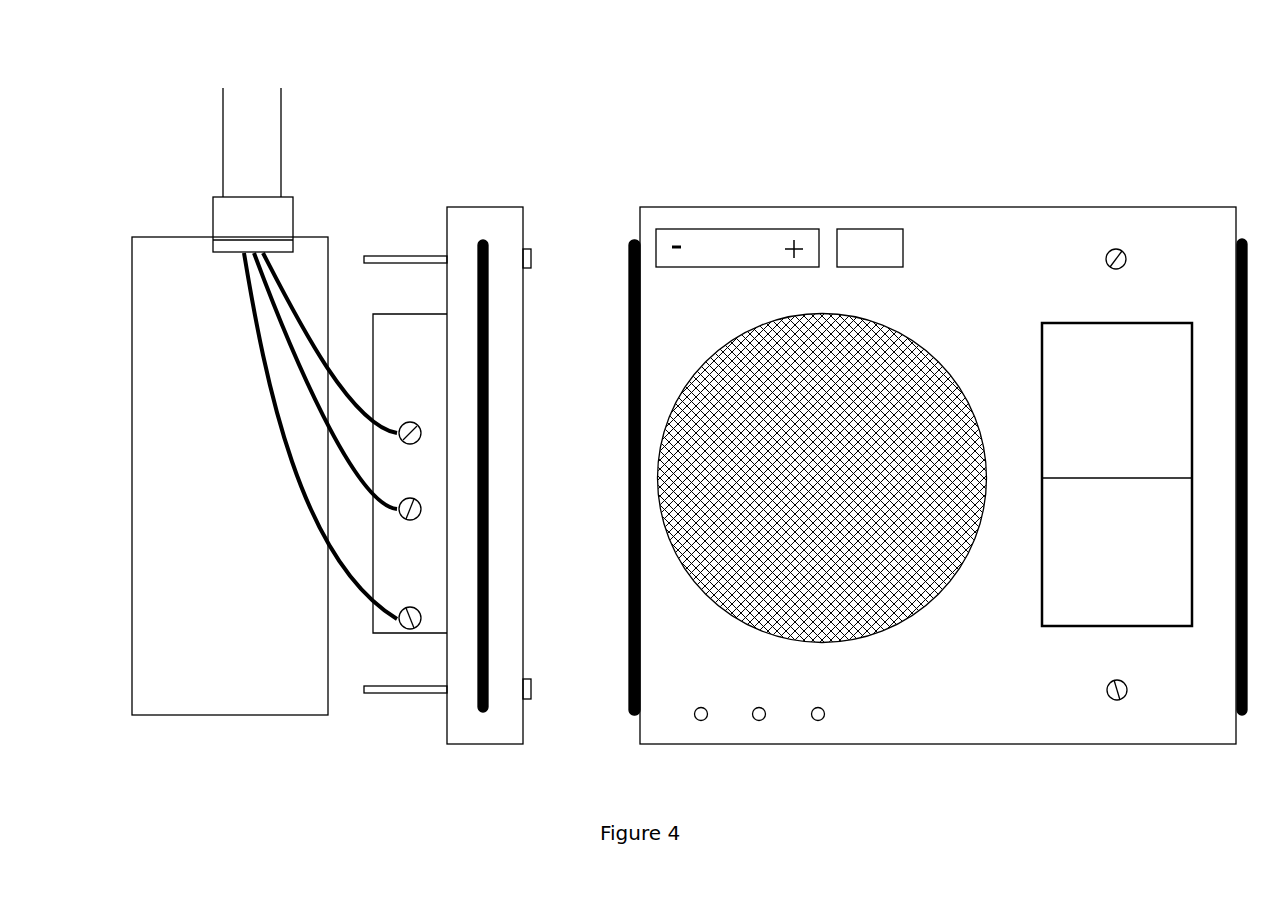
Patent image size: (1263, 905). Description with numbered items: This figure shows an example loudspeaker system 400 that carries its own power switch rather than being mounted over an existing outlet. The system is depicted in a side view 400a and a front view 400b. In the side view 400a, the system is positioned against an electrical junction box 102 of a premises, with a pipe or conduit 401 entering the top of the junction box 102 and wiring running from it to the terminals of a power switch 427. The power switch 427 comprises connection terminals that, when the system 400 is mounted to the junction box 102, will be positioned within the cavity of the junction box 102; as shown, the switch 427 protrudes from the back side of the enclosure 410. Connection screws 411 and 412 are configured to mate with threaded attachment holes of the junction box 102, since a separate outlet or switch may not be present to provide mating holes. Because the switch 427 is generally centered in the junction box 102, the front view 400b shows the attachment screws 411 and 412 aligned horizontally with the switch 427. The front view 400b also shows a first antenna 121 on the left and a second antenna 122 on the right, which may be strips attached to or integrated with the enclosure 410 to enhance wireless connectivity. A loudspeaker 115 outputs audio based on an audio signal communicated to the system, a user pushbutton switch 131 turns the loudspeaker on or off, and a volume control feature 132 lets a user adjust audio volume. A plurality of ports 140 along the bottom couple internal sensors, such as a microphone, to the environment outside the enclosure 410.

The loudspeaker system 400 is at (747, 85).
The side view 400a is at (541, 117).
The front view 400b is at (938, 117).
The pipe / conduit 401 is at (170, 120).
The electrical junction box 102 is at (185, 237).
The enclosure 410 is at (508, 206).
The first antenna 121 is at (478, 252).
The second antenna 122 is at (1236, 262).
The connection screw 411 is at (533, 256).
The connection screw 412 is at (533, 686).
The power switch 427 is at (372, 358).
The volume control feature 132 is at (738, 229).
The user pushbutton switch 131 is at (872, 229).
The loudspeaker 115 is at (752, 328).
The ports 140 is at (700, 721).